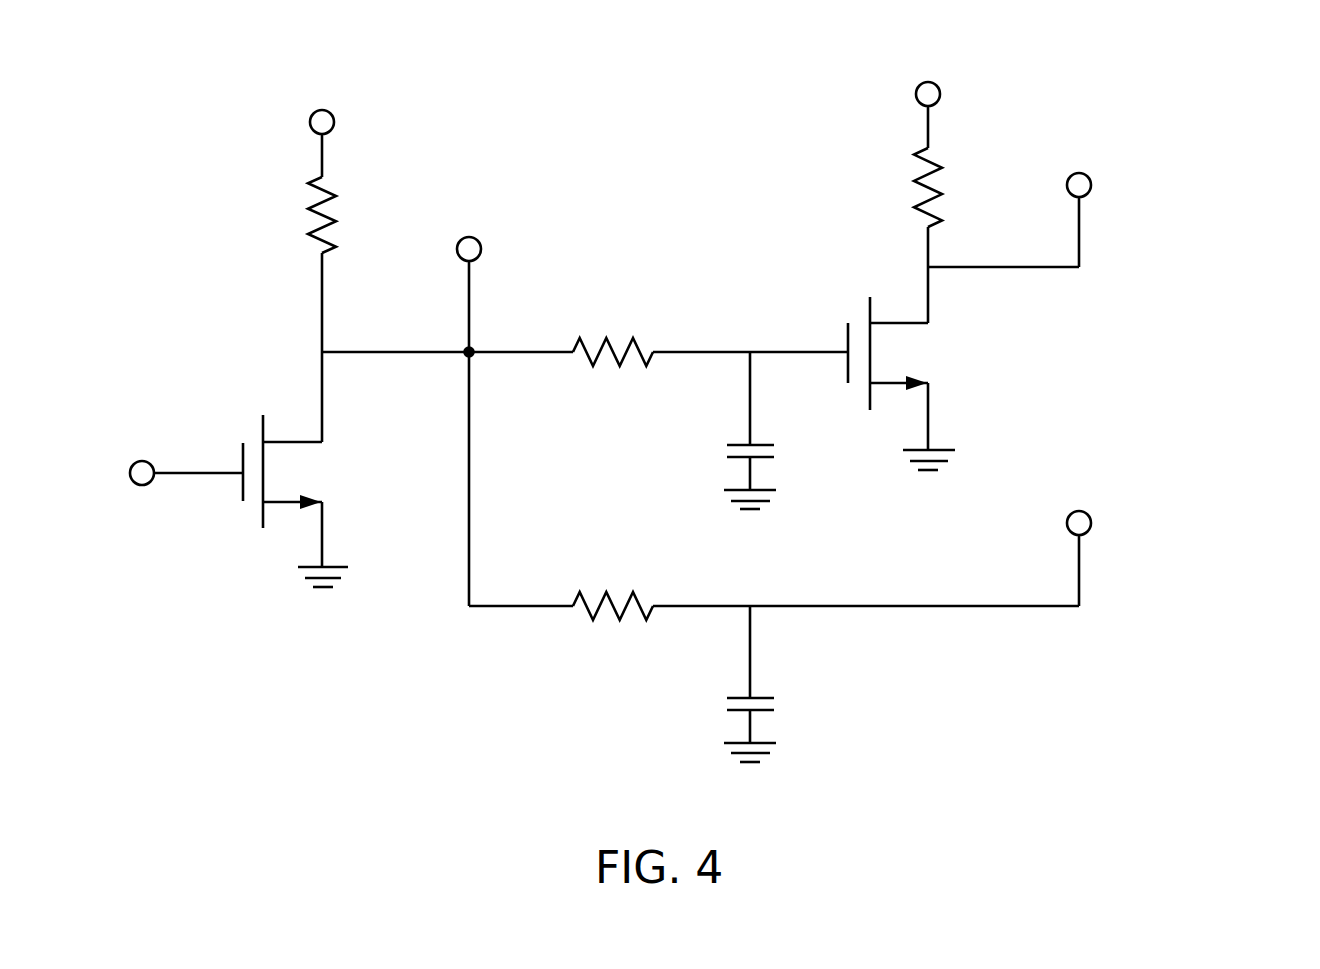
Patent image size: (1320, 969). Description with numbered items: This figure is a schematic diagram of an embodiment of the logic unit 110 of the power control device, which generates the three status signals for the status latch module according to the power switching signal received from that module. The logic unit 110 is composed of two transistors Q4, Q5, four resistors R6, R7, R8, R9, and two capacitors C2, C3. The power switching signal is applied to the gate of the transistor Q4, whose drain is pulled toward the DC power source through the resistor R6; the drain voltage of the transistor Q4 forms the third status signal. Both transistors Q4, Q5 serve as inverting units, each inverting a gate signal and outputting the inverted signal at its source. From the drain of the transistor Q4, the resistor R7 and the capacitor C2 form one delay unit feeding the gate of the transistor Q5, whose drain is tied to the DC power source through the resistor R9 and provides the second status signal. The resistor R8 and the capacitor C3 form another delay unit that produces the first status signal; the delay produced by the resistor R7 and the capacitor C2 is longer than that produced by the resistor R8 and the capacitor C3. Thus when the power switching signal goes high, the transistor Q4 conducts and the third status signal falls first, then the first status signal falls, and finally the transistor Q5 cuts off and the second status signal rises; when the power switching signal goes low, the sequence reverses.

The logic unit 110 is at (1157, 85).
The resistor R6 is at (342, 215).
The resistor R7 is at (613, 334).
The resistor R8 is at (613, 588).
The resistor R9 is at (949, 187).
The transistor Q4 is at (297, 471).
The transistor Q5 is at (903, 353).
The capacitor C2 is at (769, 421).
The capacitor C3 is at (769, 674).